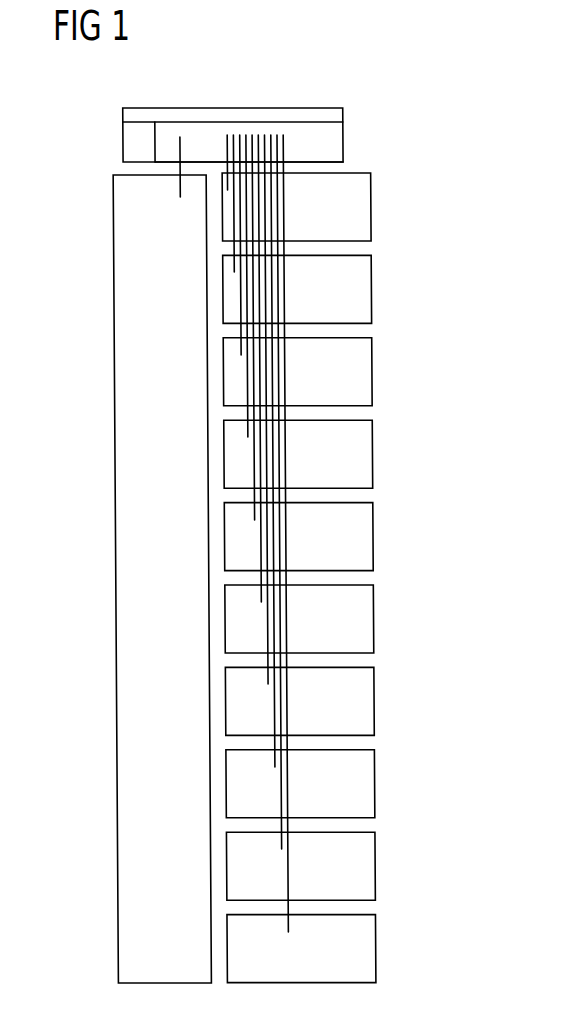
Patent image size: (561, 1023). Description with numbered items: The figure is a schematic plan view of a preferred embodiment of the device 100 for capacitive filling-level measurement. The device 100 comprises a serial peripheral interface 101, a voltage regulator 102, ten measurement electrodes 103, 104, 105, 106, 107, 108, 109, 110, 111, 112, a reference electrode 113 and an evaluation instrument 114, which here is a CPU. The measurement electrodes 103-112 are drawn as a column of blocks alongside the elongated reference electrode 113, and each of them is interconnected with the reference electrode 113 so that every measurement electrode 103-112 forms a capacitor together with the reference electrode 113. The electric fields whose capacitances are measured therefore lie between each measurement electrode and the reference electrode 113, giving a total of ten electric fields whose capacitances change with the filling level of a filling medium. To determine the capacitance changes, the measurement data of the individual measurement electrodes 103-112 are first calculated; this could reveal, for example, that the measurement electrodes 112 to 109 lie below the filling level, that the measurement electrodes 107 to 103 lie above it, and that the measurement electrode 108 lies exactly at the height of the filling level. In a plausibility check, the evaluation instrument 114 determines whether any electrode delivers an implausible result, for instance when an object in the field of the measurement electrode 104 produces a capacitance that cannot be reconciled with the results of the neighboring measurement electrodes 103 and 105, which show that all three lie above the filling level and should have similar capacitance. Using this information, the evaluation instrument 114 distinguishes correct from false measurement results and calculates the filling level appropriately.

The device 100 is at (379, 77).
The serial peripheral interface 101 is at (223, 110).
The voltage regulator 102 is at (133, 141).
The measurement electrode 103 is at (372, 209).
The measurement electrode 104 is at (372, 291).
The measurement electrode 105 is at (372, 374).
The measurement electrode 106 is at (372, 456).
The measurement electrode 107 is at (372, 539).
The measurement electrode 108 is at (372, 621).
The measurement electrode 109 is at (372, 703).
The measurement electrode 110 is at (372, 786).
The measurement electrode 111 is at (372, 868).
The measurement electrode 112 is at (372, 951).
The reference electrode 113 is at (120, 508).
The evaluation instrument 114 is at (343, 140).